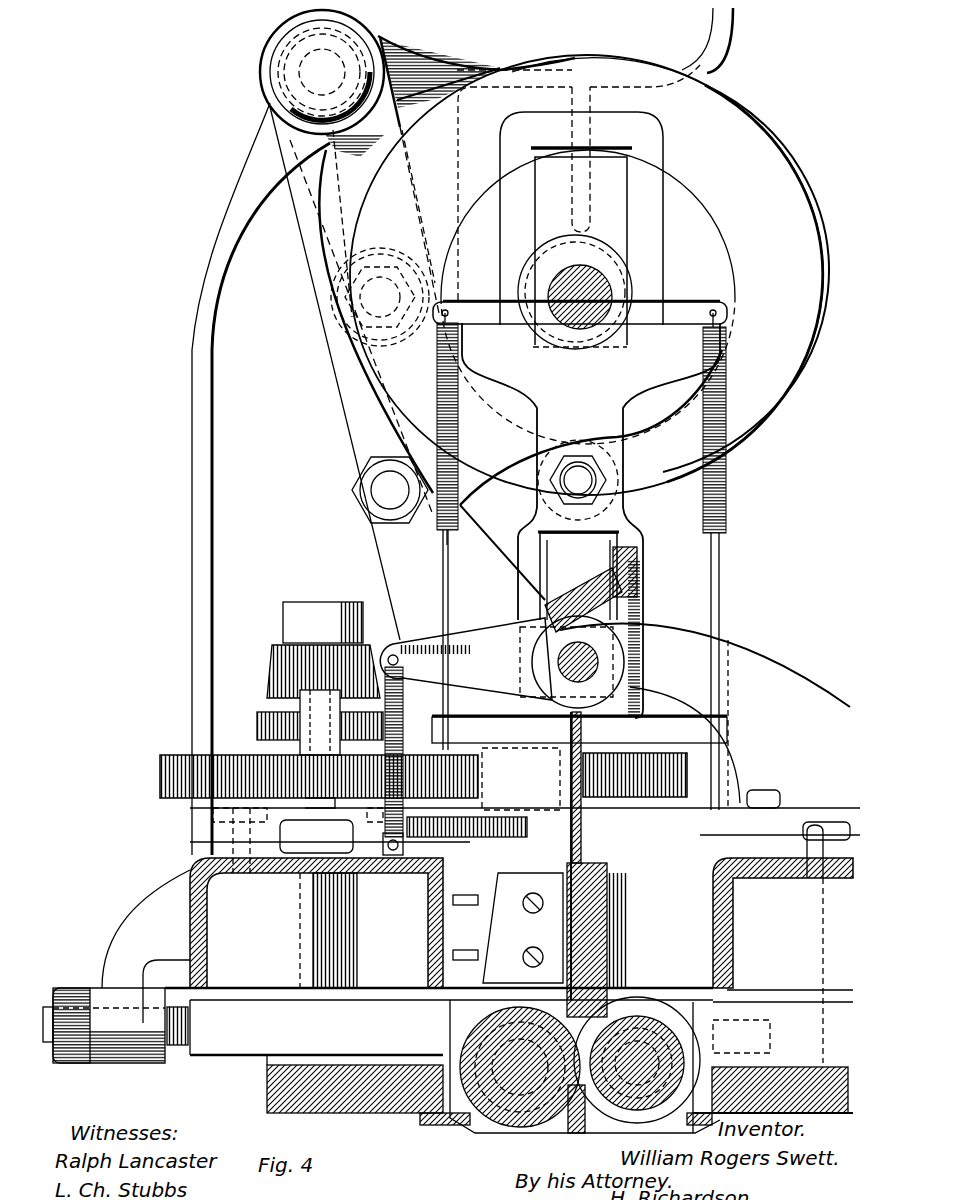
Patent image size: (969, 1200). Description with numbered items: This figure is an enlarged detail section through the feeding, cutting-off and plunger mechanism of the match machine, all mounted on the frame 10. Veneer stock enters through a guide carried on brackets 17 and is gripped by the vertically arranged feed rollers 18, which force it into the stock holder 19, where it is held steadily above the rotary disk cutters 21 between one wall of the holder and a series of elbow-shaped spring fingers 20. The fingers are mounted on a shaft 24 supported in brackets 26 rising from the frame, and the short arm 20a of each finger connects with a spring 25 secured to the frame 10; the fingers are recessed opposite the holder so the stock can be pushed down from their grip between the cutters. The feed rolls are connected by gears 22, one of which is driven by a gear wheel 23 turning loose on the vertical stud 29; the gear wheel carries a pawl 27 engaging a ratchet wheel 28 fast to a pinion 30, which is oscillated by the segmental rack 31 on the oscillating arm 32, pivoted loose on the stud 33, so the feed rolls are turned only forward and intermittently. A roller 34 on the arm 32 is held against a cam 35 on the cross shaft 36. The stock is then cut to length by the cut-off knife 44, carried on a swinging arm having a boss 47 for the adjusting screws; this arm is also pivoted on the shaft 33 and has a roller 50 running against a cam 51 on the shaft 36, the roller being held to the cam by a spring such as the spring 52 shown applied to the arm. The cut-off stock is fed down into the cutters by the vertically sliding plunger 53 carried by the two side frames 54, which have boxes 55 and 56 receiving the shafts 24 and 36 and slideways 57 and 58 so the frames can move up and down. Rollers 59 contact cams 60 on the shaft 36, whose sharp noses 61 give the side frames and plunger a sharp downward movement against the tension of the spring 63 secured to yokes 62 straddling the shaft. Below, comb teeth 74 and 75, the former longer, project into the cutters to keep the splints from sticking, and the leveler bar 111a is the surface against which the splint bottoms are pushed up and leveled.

The frame 10 is at (192, 488).
The brackets 17 is at (793, 807).
The feed rollers 18 is at (443, 1010).
The stock holder 19 is at (600, 855).
The spring fingers 20 is at (440, 945).
The short arm 20a is at (383, 603).
The rotary cutters 21 is at (480, 1120).
The gears 22 is at (673, 807).
The gear wheel 23 is at (160, 780).
The shaft 24 is at (590, 662).
The spring 25 is at (283, 752).
The brackets 26 is at (690, 643).
The pawl 27 is at (293, 723).
The ratchet wheel 28 is at (257, 722).
The vertical stud 29 is at (312, 600).
The pinion 30 is at (275, 655).
The segmental rack 31 is at (622, 585).
The oscillating arm 32 is at (357, 440).
The stud 33 is at (347, 70).
The roller 34 is at (345, 310).
The cam 35 is at (800, 190).
The cross shaft 36 is at (590, 290).
The cut-off knife 44 is at (440, 970).
The boss 47 is at (440, 925).
The roller 50 is at (360, 478).
The cam 51 is at (365, 385).
The spring 52 is at (422, 860).
The plunger 53 is at (657, 777).
The side frames 54 is at (622, 512).
The box 55 is at (600, 240).
The box 56 is at (640, 608).
The slideway 57 is at (630, 180).
The slideway 58 is at (610, 547).
The rollers 59 is at (600, 455).
The cams 60 is at (668, 398).
The sharp noses 61 is at (480, 505).
The yokes 62 is at (680, 306).
The spring 63 is at (727, 360).
The long comb teeth 74 is at (568, 1125).
The short comb teeth 75 is at (580, 1125).
The leveler bar 111a is at (723, 1120).